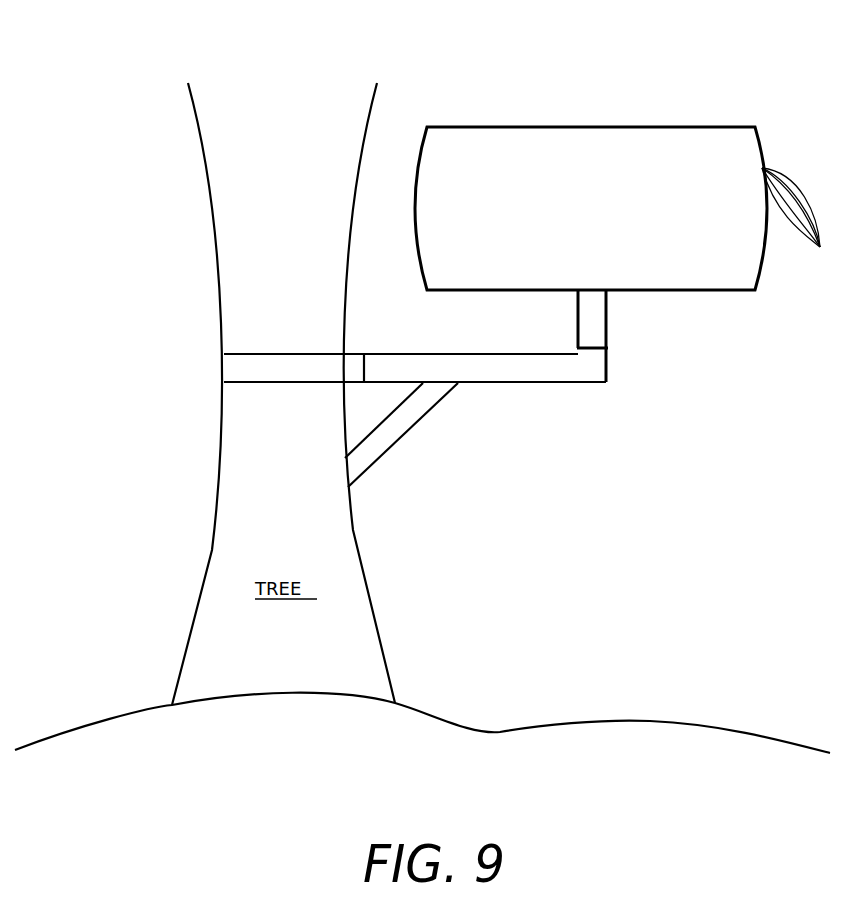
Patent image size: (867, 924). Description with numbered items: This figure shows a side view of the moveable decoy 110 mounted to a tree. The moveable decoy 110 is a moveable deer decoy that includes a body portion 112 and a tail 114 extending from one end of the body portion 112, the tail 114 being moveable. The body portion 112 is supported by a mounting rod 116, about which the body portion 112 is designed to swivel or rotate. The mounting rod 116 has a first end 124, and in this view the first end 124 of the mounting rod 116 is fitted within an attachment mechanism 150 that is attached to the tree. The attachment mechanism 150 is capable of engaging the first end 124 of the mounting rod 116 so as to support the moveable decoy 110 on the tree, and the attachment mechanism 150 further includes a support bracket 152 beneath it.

The moveable decoy 110 is at (631, 209).
The body portion 112 is at (600, 127).
The tail 114 is at (792, 172).
The mounting rod 116 is at (607, 318).
The first end 124 is at (578, 341).
The attachment mechanism 150 is at (540, 383).
The support bracket 152 is at (408, 430).